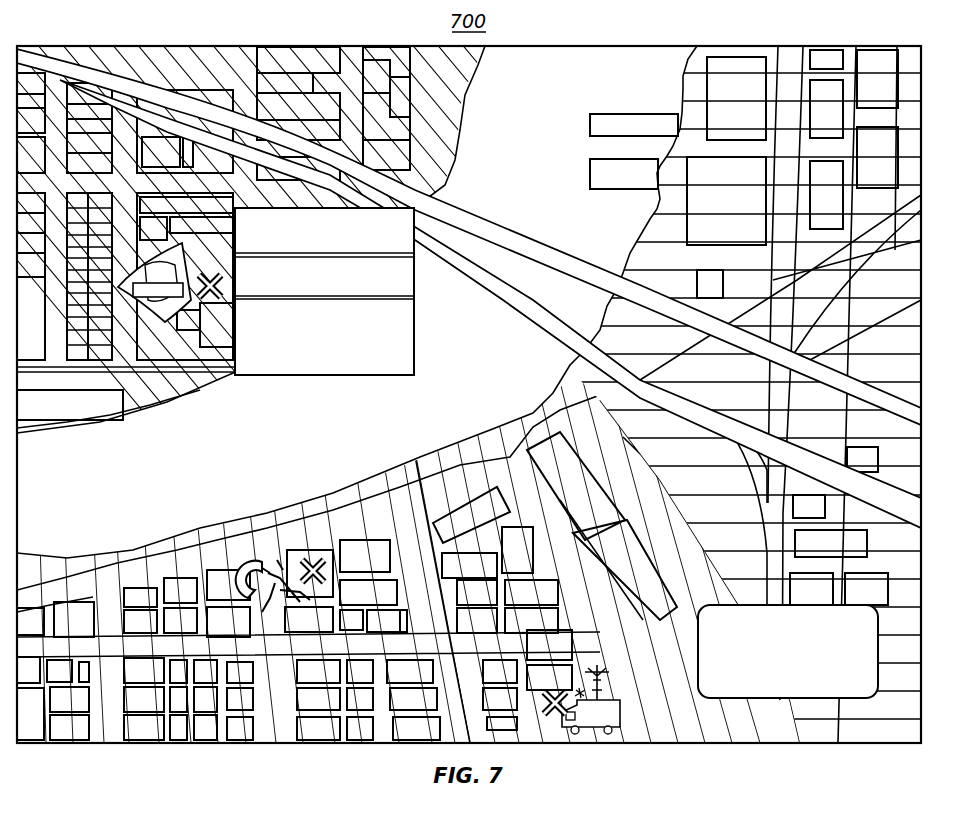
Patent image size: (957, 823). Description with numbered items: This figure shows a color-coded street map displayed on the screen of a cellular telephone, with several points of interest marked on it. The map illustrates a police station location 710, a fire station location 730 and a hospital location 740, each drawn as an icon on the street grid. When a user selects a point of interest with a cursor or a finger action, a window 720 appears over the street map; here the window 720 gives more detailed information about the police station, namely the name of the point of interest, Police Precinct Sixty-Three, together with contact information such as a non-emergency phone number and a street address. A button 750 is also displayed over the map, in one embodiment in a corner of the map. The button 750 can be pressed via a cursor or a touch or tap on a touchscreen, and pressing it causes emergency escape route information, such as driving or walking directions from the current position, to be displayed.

The police station location 710 is at (168, 325).
The window 720 is at (414, 280).
The fire station location 730 is at (257, 553).
The hospital location 740 is at (597, 740).
The button 750 is at (763, 698).